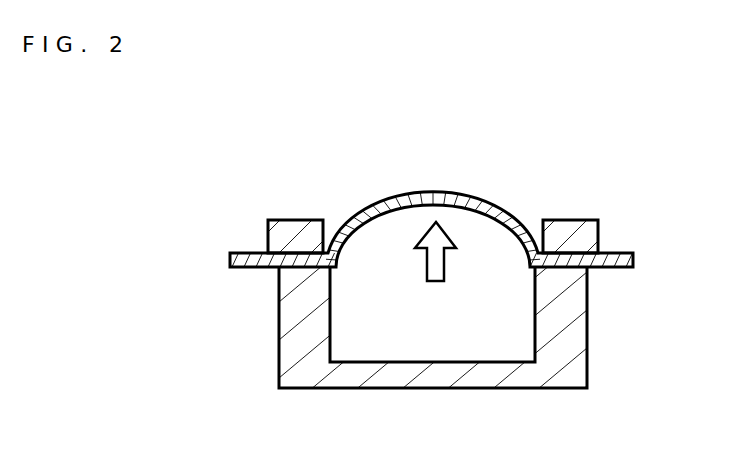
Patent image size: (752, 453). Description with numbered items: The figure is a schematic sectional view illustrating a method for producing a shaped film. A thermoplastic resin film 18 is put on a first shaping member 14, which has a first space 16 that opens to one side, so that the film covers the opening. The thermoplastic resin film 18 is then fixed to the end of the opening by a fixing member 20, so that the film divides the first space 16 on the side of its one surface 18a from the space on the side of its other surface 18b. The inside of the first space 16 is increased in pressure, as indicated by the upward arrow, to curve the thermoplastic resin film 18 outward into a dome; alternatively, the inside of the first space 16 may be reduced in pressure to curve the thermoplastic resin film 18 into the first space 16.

The first shaping member 14 is at (575, 319).
The first space 16 is at (500, 322).
The thermoplastic resin film 18 is at (635, 256).
The one surface of the thermoplastic resin film 18a is at (388, 212).
The other surface of the thermoplastic resin film 18b is at (407, 191).
The fixing member 20 is at (585, 228).